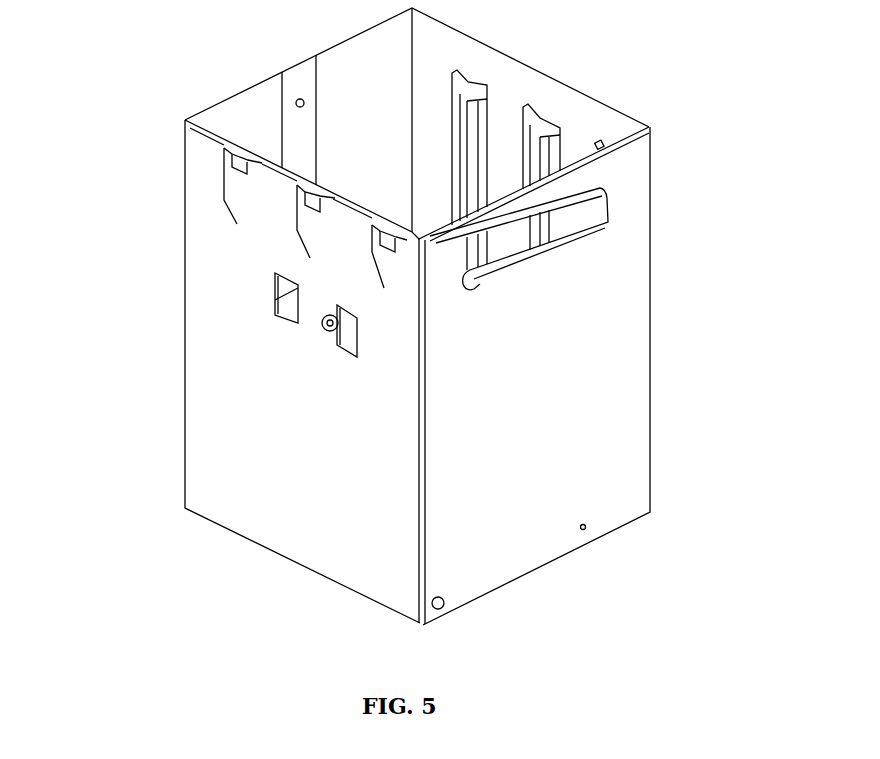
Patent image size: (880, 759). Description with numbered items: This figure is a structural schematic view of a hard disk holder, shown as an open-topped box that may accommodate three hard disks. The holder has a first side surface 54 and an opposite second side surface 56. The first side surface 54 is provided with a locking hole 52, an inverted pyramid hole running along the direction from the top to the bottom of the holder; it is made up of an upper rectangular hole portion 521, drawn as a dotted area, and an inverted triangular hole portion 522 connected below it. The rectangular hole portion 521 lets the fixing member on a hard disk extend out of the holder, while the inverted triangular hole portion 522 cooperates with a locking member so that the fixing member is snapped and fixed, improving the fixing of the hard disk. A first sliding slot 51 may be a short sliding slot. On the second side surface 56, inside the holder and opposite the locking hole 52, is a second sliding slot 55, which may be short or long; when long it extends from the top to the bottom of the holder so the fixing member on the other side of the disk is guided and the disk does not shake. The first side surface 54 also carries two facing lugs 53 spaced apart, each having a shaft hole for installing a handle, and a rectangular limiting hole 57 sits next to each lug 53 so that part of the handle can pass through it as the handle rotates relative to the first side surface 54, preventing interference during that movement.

The first sliding slot 51 is at (396, 221).
The locking hole 52 is at (238, 192).
The rectangular hole portion 521 is at (563, 259).
The inverted triangular hole portion 522 is at (394, 292).
The lug 53 is at (275, 305).
The first side surface 54 is at (288, 407).
The second sliding slot 55 is at (470, 77).
The second side surface 56 is at (572, 117).
The limiting hole 57 is at (356, 332).